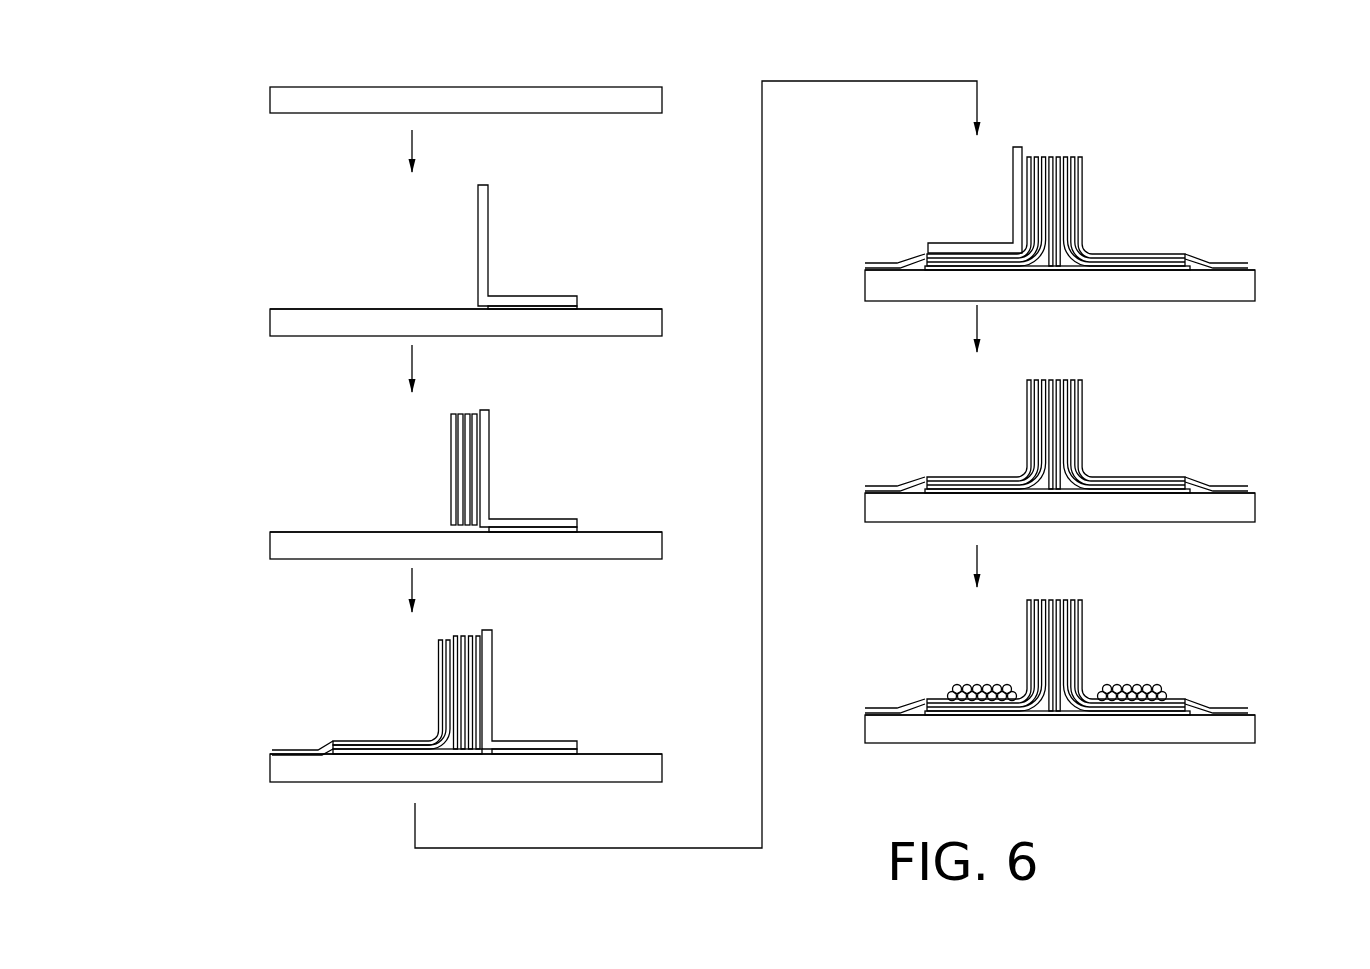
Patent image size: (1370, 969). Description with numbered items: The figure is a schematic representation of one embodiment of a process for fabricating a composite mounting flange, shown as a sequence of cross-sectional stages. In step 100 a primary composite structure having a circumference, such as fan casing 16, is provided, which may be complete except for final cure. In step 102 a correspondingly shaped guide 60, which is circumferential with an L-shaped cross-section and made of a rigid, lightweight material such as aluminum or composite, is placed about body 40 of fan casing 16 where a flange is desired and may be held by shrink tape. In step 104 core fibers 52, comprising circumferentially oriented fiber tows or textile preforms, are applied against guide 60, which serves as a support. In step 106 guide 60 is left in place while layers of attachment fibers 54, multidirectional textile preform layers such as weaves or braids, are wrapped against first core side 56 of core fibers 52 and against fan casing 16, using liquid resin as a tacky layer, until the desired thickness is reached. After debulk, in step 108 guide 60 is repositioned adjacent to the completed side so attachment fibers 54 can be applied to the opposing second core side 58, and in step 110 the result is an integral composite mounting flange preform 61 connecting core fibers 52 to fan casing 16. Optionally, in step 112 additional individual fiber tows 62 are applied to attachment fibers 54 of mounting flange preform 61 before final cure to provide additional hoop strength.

The fan casing 16 is at (607, 116).
The body 40 is at (396, 333).
The core fibers 52 is at (759, 426).
The attachment fibers 54 is at (403, 736).
The first core side 56 is at (452, 462).
The second core side 58 is at (478, 462).
The guide 60 is at (535, 298).
The mounting flange preform 61 is at (937, 445).
The additional individual fiber tows 62 is at (964, 686).
The step 100 is at (261, 61).
The step 102 is at (281, 231).
The step 104 is at (286, 436).
The step 106 is at (301, 666).
The step 108 is at (1221, 137).
The step 110 is at (1229, 392).
The step 112 is at (1245, 632).